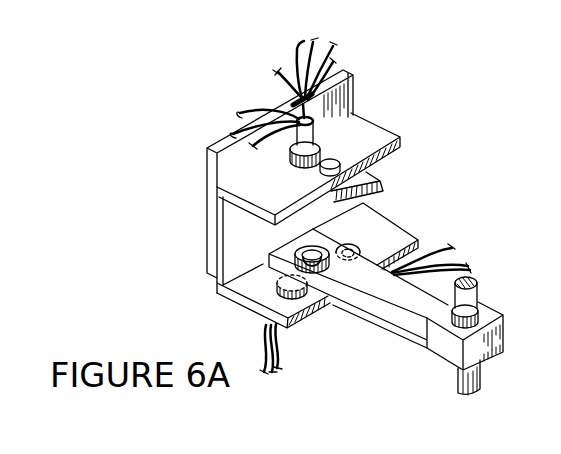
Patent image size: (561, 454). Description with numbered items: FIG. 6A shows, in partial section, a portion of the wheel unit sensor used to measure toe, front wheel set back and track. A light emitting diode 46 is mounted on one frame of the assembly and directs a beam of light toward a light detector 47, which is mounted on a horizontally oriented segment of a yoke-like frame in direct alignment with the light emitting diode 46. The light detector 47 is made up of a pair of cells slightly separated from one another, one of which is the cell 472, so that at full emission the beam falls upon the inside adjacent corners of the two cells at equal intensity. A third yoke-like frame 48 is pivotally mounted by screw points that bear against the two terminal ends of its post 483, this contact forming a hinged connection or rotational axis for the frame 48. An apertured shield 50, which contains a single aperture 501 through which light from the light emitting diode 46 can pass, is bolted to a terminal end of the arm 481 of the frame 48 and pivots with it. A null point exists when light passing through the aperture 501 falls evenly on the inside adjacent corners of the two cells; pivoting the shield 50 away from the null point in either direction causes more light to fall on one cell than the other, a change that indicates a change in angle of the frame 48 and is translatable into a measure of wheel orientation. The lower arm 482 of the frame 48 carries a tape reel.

The light emitting diode 46 is at (317, 118).
The light detector 47 is at (248, 309).
The cell 472 is at (360, 241).
The third yoke-like frame 48 is at (390, 333).
The arm 481 is at (492, 304).
The lower arm 482 is at (268, 301).
The post 483 is at (456, 390).
The apertured shield 50 is at (296, 250).
The aperture 501 is at (325, 261).